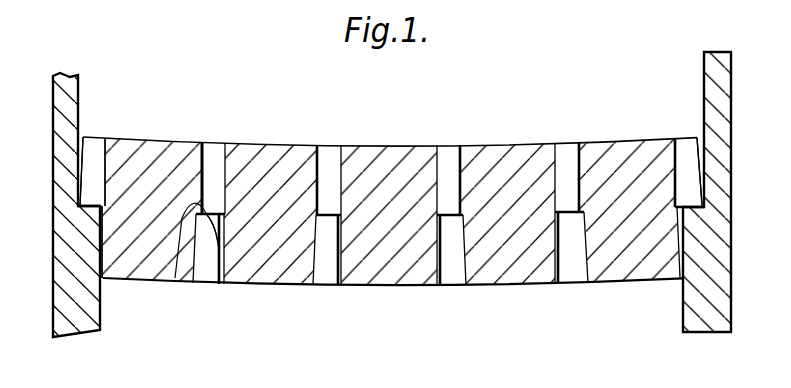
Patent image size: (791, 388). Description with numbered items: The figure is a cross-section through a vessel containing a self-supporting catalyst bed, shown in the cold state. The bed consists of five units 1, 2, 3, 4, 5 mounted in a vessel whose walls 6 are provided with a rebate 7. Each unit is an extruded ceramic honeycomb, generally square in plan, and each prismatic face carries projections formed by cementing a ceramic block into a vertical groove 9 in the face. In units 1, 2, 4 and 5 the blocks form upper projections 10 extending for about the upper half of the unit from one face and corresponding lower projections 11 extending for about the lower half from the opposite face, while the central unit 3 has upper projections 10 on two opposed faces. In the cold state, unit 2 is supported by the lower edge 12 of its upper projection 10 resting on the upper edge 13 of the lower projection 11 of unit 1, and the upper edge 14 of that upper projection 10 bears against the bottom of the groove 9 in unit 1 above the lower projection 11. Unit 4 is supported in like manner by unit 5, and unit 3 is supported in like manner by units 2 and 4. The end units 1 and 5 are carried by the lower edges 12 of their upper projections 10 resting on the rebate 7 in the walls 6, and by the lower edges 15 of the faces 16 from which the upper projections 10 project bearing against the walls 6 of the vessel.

The unit 1 is at (156, 150).
The unit 2 is at (285, 160).
The unit 3 is at (395, 155).
The unit 4 is at (522, 150).
The unit 5 is at (638, 145).
The walls 6 is at (717, 257).
The rebate 7 is at (707, 195).
The vertical groove 9 is at (220, 278).
The upper projection 10 is at (93, 152).
The lower projection 11 is at (205, 268).
The lower edge of upper projection 12 is at (175, 278).
The upper edge of lower projection 13 is at (219, 250).
The upper edge of upper projection 14 is at (203, 143).
The lower edge of face 15 is at (103, 280).
The face 16 is at (100, 242).